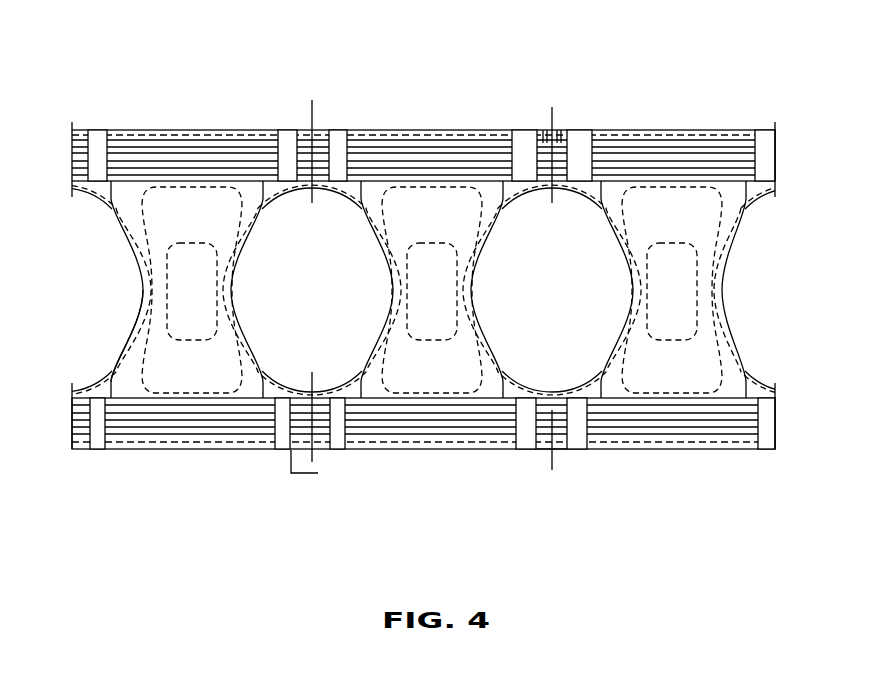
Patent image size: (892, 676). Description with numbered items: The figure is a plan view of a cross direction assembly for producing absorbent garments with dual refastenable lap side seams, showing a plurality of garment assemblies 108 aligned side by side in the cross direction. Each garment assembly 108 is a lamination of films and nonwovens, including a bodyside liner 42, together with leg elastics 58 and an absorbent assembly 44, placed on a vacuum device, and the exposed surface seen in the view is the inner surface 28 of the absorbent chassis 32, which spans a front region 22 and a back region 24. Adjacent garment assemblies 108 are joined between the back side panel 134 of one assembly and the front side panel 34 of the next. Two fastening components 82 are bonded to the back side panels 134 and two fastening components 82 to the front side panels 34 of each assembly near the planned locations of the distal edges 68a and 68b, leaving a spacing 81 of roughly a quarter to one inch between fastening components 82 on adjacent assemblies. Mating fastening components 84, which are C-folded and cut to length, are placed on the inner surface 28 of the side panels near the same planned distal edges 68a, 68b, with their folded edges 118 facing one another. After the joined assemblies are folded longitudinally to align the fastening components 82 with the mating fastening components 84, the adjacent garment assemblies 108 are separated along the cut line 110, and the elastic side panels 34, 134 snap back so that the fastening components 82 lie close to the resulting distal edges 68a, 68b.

The front region 22 is at (195, 133).
The back region 24 is at (165, 433).
The inner surface 28 is at (122, 355).
The absorbent chassis 32 is at (120, 280).
The front side panel 34 is at (107, 203).
The bodyside liner 42 is at (241, 328).
The absorbent assembly 44 is at (408, 292).
The leg elastics 58 is at (118, 238).
The distal edge 68a is at (547, 131).
The distal edge 68b is at (320, 455).
The spacing 81 is at (316, 474).
The fastening component 82 is at (94, 130).
The mating fastening component 84 is at (346, 131).
The garment assembly 108 is at (152, 118).
The cut line 110 is at (314, 100).
The folded edge 118 is at (543, 131).
The back side panel 134 is at (95, 380).